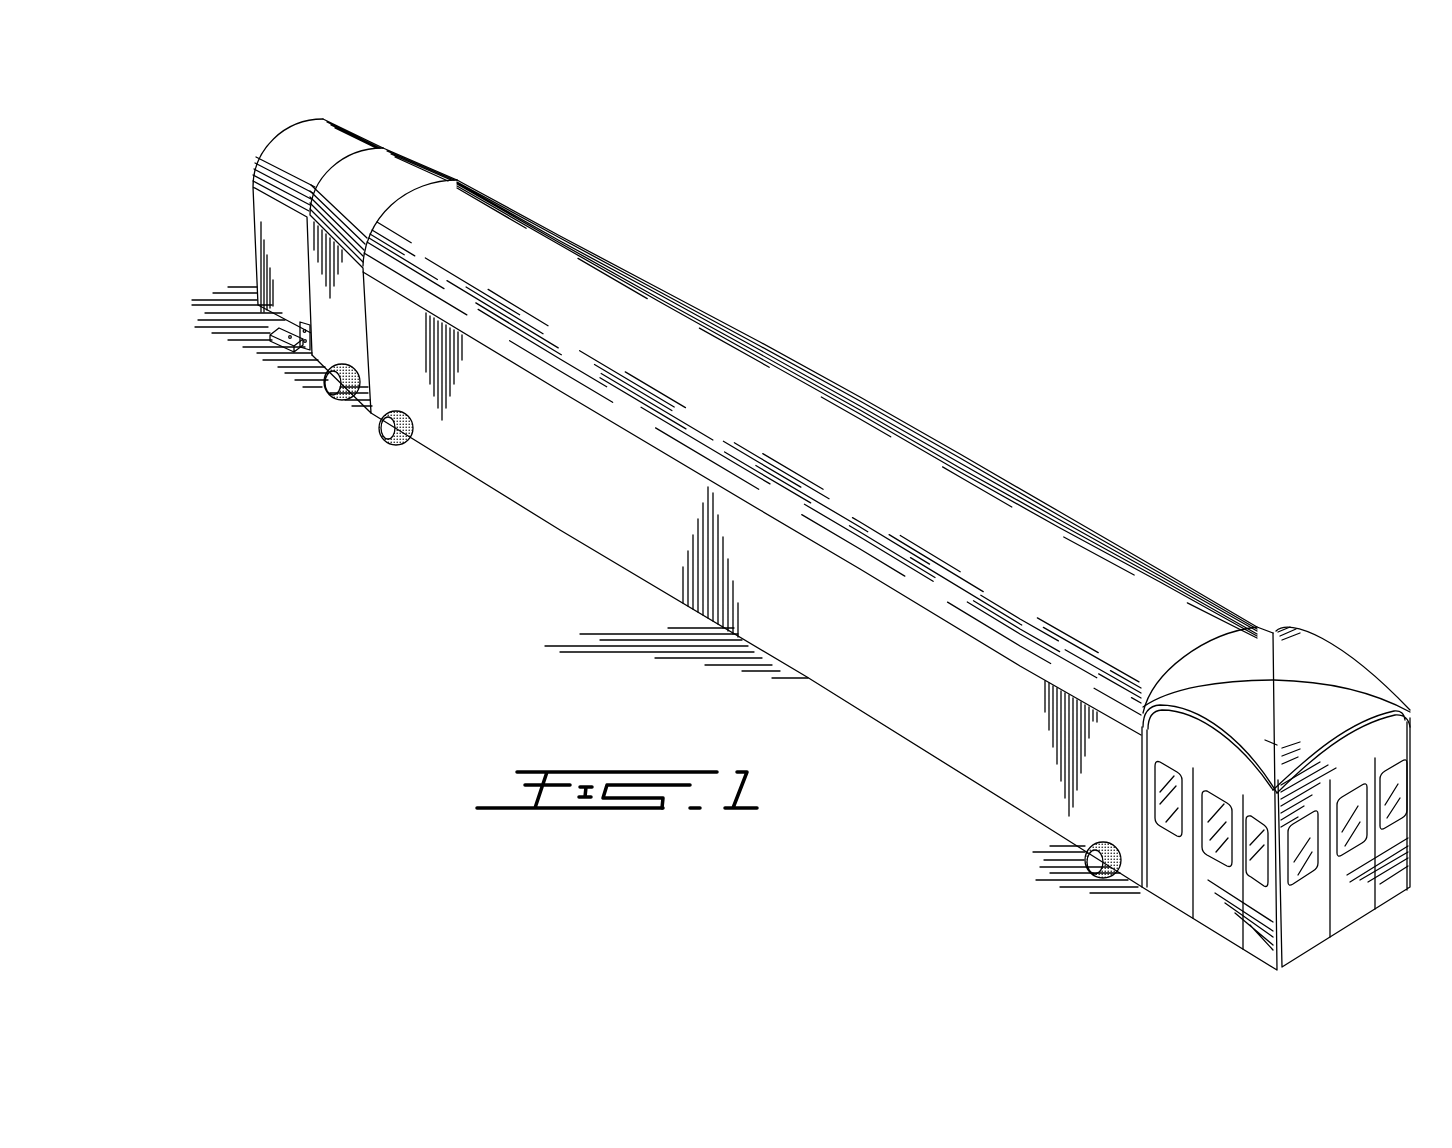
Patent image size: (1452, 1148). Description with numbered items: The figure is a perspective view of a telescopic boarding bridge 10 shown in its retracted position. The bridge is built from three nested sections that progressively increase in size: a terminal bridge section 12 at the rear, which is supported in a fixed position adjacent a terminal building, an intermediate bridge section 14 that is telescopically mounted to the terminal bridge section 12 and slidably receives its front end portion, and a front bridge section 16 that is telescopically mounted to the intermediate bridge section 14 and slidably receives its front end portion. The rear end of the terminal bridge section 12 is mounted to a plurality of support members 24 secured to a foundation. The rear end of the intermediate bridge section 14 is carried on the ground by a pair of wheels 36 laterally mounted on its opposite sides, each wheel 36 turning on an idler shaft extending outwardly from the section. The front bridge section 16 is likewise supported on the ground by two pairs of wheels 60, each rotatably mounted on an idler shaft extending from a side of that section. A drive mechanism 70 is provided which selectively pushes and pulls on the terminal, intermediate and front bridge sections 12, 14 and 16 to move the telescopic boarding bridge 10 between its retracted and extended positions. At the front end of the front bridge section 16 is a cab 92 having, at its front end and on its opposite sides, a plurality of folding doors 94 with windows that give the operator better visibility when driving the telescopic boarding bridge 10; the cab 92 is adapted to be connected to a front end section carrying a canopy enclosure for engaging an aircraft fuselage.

The telescopic boarding bridge 10 is at (1250, 562).
The terminal bridge section 12 is at (367, 135).
The intermediate bridge section 14 is at (433, 162).
The front bridge section 16 is at (572, 232).
The support members 24 is at (287, 343).
The wheels 36 is at (345, 400).
The wheels 60 is at (402, 448).
The drive mechanism 70 is at (302, 358).
The cab 92 is at (1343, 640).
The folding doors 94 is at (1253, 931).